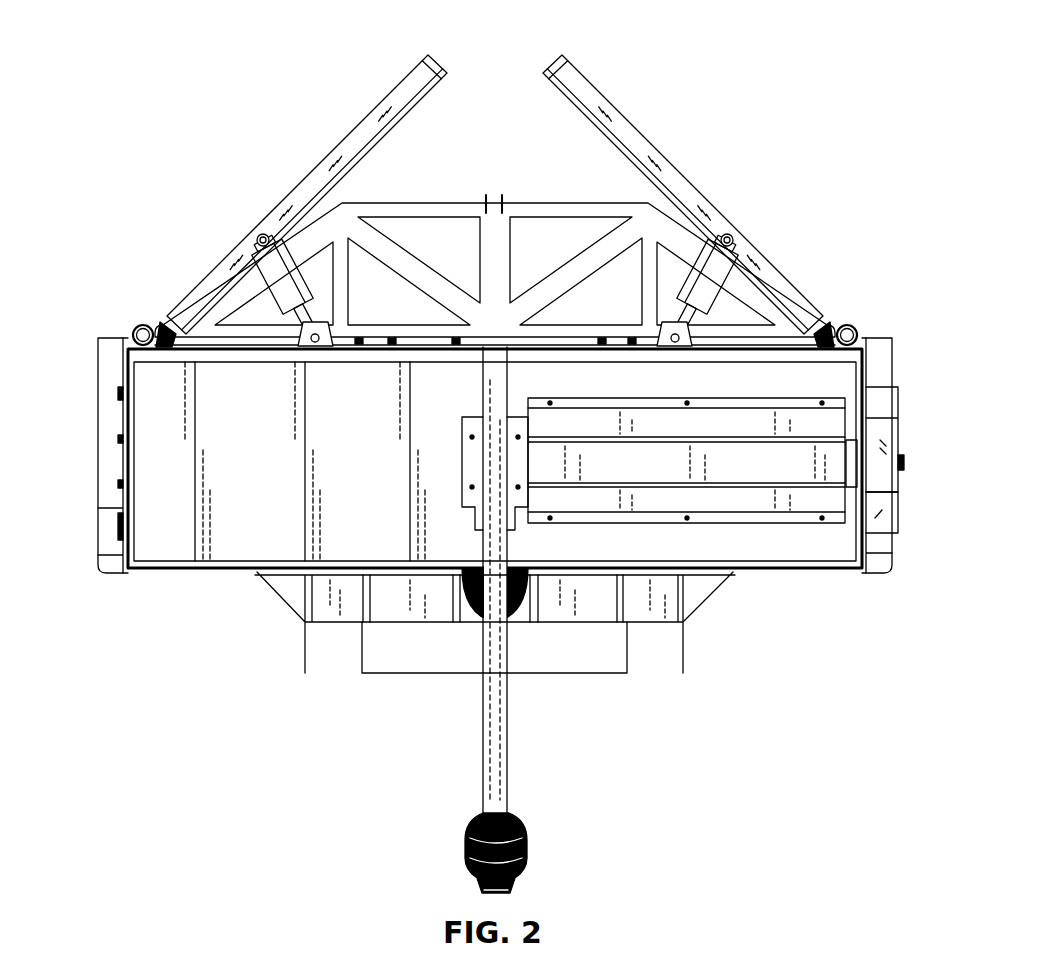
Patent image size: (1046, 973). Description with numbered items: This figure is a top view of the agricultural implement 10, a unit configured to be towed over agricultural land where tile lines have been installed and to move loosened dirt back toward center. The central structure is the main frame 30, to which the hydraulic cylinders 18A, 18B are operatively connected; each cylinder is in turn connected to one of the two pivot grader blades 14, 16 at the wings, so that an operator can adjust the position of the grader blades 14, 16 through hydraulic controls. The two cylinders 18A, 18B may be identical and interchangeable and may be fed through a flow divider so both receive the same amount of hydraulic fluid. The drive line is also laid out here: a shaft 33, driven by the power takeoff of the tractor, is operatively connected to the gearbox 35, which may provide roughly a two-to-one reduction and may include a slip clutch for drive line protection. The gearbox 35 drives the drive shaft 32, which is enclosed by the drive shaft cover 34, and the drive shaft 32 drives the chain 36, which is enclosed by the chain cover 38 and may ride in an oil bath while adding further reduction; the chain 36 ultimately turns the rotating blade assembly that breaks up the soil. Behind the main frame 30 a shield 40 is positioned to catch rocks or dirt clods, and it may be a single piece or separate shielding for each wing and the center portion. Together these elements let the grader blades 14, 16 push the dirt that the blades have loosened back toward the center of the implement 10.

The agricultural implement 10 is at (500, 446).
The grader blade 14 is at (351, 128).
The grader blade 16 is at (618, 118).
The hydraulic cylinder 18A is at (705, 323).
The hydraulic cylinder 18B is at (290, 323).
The main frame 30 is at (500, 505).
The drive shaft 32 is at (692, 462).
The shaft 33 is at (500, 727).
The drive shaft cover 34 is at (763, 488).
The gearbox 35 is at (462, 458).
The chain 36 is at (877, 522).
The chain cover 38 is at (883, 448).
The shield 40 is at (532, 203).